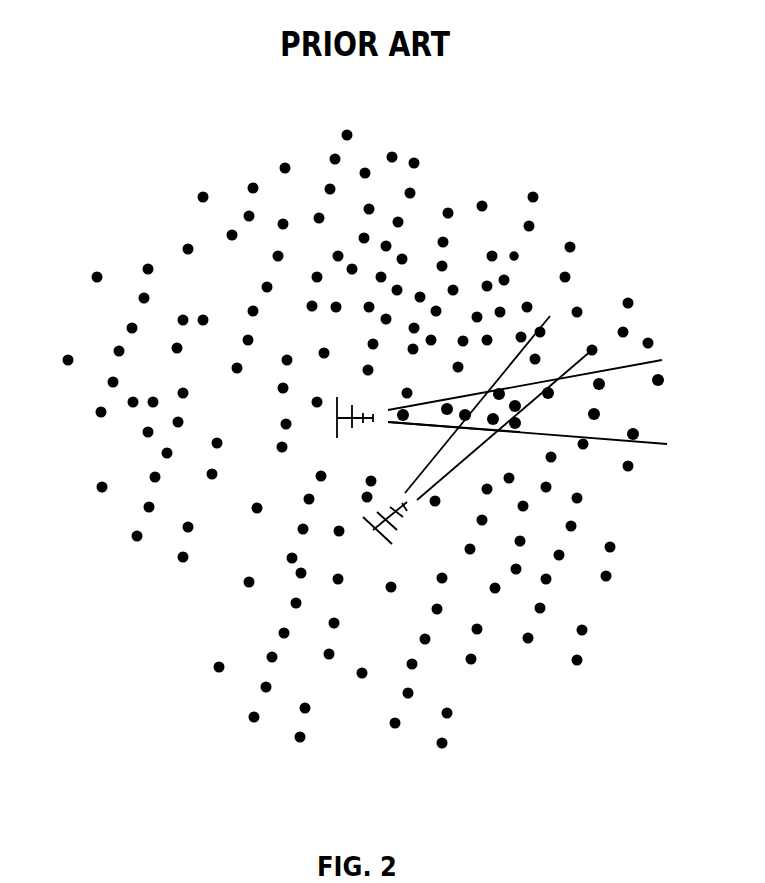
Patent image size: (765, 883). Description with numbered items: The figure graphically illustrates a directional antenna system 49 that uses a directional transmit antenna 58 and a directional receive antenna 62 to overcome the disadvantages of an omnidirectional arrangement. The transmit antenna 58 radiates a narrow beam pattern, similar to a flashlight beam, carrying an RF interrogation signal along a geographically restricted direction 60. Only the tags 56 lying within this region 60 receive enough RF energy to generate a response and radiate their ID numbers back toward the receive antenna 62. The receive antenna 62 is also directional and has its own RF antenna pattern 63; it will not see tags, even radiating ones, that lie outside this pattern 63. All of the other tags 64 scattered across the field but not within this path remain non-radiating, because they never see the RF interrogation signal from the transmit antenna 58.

The directional antenna system 49 is at (593, 244).
The tags 56 is at (521, 422).
The transmit antenna 58 is at (337, 426).
The geographically restricted direction 60 is at (430, 423).
The receive antenna 62 is at (363, 517).
The RF antenna pattern 63 is at (472, 455).
The tags 64 is at (274, 259).